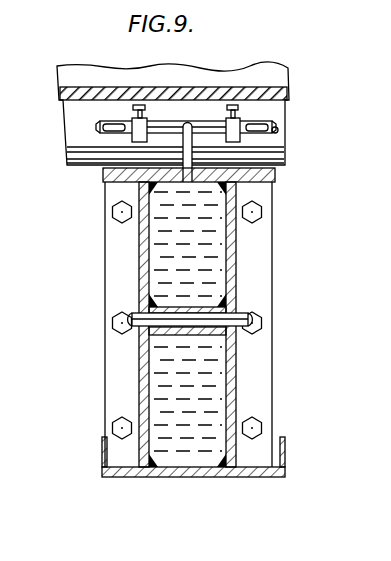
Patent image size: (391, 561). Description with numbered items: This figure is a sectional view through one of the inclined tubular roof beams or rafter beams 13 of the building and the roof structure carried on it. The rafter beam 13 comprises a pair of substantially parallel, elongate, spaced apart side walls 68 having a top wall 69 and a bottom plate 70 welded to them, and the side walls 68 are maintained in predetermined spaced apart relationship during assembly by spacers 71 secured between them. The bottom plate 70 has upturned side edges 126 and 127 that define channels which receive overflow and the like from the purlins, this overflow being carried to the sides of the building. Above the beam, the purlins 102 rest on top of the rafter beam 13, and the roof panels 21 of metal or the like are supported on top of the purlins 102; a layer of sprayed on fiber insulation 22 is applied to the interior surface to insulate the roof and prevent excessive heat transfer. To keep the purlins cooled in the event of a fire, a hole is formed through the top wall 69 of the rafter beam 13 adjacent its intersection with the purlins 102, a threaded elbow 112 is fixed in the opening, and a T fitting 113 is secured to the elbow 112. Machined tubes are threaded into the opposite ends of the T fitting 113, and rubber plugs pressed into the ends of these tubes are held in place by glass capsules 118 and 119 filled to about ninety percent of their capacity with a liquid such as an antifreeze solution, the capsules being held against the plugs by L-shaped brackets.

The roof panels 21 is at (96, 86).
The sprayed on fiber insulation 22 is at (88, 103).
The purlins 102 is at (78, 133).
The capsule 118 is at (122, 134).
The threaded elbow 112 is at (183, 141).
The T fitting 113 is at (203, 125).
The capsule 119 is at (257, 128).
The rafter beam 13 is at (157, 341).
The top wall 69 is at (143, 228).
The side walls 68 is at (140, 295).
The spacers 71 is at (180, 336).
The bottom plate 70 is at (188, 477).
The upturned side edge 126 is at (102, 460).
The upturned side edge 127 is at (285, 455).